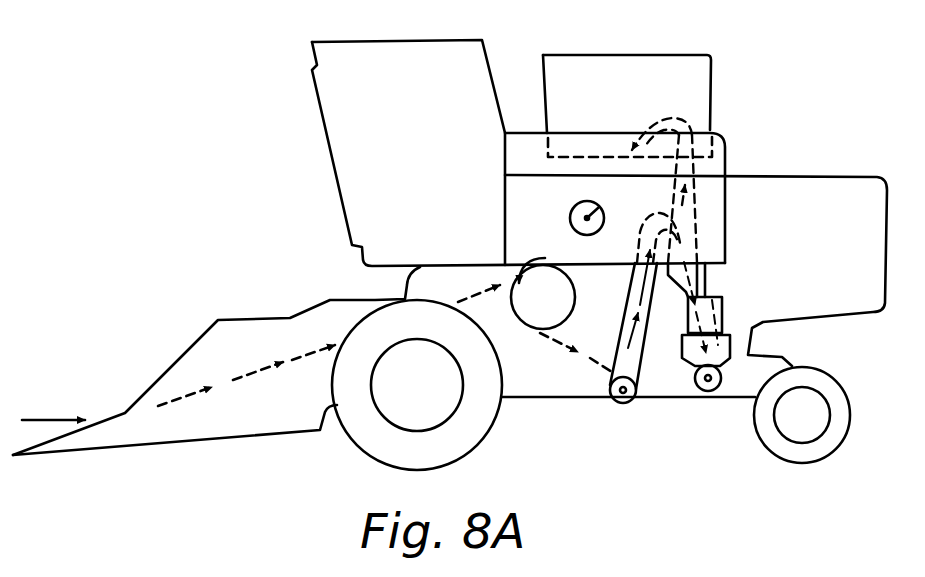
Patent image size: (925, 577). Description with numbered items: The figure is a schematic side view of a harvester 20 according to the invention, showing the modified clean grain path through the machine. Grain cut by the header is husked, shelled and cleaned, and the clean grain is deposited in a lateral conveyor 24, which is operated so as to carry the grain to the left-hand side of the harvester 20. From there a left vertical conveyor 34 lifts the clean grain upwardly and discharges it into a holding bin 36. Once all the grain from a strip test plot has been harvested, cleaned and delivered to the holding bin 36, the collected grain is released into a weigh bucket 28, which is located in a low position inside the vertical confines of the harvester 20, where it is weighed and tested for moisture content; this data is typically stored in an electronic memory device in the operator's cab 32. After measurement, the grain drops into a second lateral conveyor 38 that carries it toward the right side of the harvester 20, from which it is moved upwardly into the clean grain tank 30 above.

The harvester 20 is at (197, 154).
The lateral conveyor 24 is at (623, 407).
The weigh bucket 28 is at (720, 308).
The clean grain tank 30 is at (700, 80).
The operator's cab 32 is at (340, 167).
The left vertical conveyor 34 is at (658, 363).
The holding bin 36 is at (680, 243).
The second lateral conveyor 38 is at (705, 397).